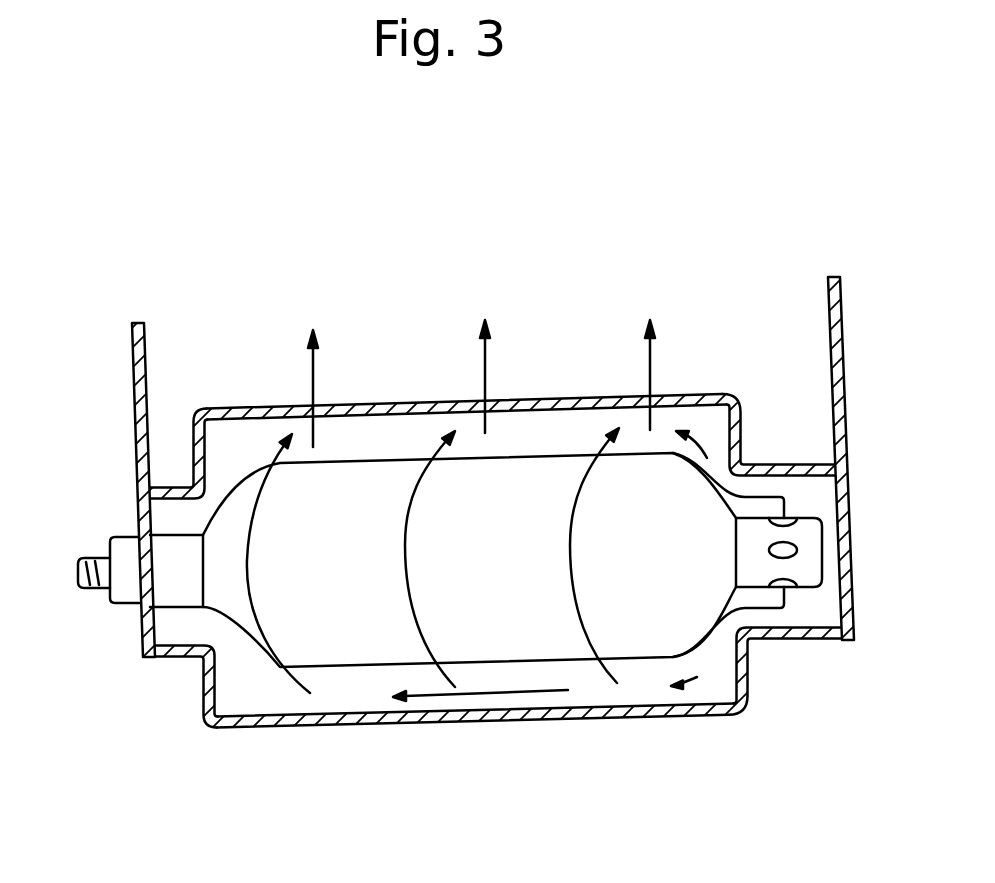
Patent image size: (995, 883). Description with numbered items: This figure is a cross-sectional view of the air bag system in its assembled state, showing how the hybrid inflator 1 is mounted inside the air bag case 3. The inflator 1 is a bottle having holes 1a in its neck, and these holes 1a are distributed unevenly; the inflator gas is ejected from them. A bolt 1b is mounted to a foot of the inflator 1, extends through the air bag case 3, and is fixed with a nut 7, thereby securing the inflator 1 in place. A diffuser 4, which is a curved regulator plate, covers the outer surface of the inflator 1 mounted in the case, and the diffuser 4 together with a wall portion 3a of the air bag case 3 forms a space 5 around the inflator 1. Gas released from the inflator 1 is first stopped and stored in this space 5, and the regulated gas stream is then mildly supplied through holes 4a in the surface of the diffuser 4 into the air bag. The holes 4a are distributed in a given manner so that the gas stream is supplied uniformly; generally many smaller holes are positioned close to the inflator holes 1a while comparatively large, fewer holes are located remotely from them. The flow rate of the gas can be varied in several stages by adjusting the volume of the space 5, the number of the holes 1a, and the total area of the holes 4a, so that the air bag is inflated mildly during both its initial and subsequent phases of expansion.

The hybrid inflator 1 is at (358, 607).
The holes 1a is at (800, 533).
The bolt 1b is at (97, 553).
The air bag case 3 is at (493, 552).
The wall portion 3a is at (503, 724).
The diffuser 4 is at (402, 400).
The holes 4a is at (297, 407).
The space 5 is at (265, 700).
The nut 7 is at (128, 600).